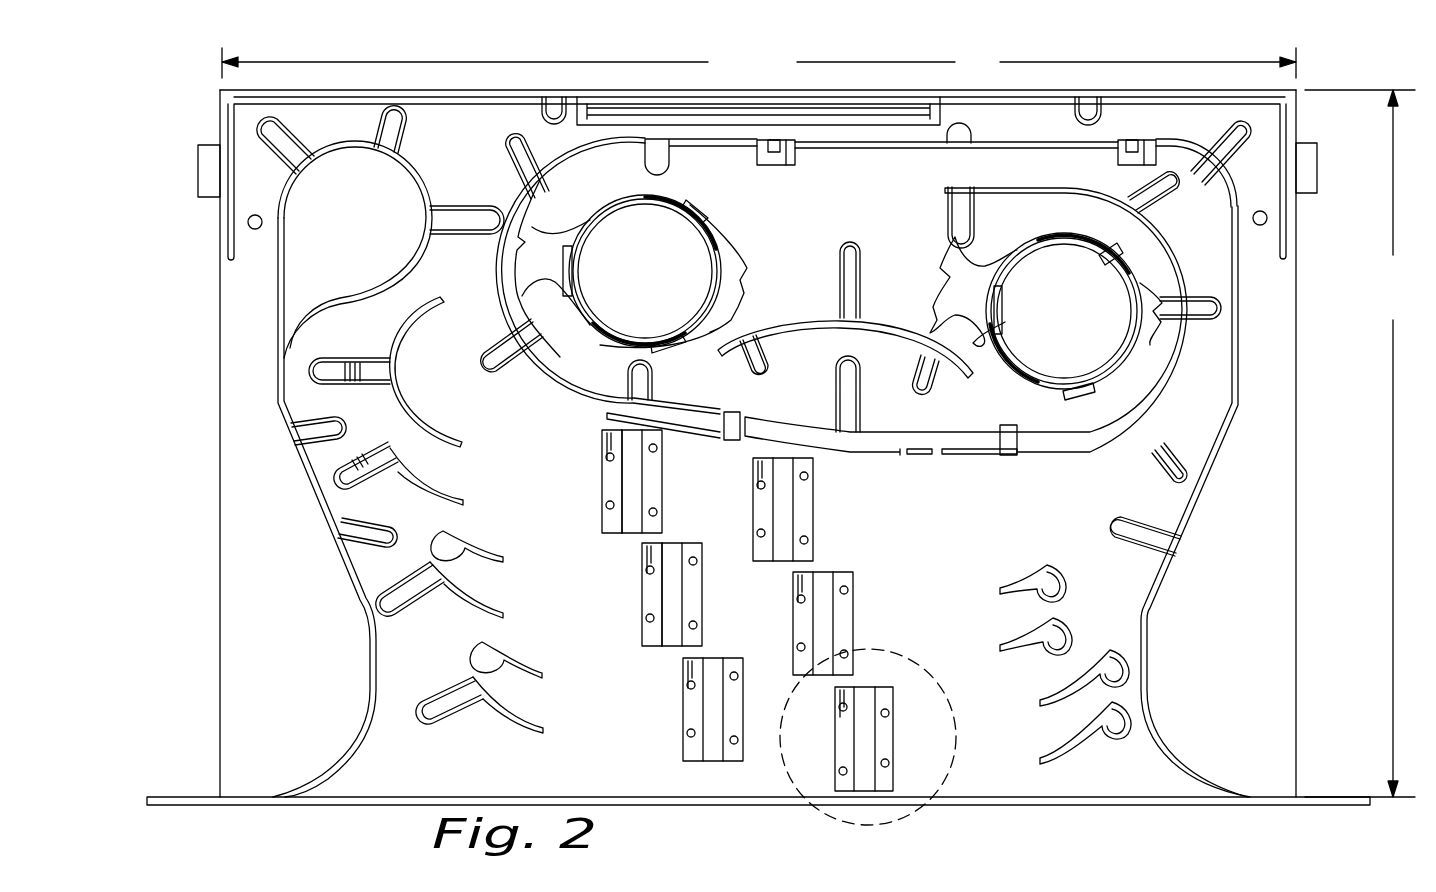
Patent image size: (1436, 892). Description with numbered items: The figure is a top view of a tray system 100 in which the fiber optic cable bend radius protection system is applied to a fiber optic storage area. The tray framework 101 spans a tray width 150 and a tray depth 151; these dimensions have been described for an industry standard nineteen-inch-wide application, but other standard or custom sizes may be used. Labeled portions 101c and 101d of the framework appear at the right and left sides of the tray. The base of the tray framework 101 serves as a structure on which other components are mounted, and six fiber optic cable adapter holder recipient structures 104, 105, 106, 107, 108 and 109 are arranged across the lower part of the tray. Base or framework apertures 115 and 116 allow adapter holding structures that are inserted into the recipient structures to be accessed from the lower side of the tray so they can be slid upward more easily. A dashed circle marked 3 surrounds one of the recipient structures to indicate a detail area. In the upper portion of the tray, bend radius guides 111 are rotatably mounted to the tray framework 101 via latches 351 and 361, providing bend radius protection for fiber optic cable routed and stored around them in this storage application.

The tray system 100 is at (968, 81).
The tray framework 101 is at (1028, 528).
The right side wall 101c is at (1298, 525).
The left side wall 101d is at (221, 510).
The bend radius guides 111 is at (517, 265).
The latch 361 is at (665, 338).
The latch 351 is at (1082, 375).
The fiber optic cable adapter holder recipient structure 104 is at (612, 522).
The fiber optic cable adapter holder recipient structure 105 is at (651, 638).
The fiber optic cable adapter holder recipient structure 106 is at (692, 705).
The fiber optic cable adapter holder recipient structure 107 is at (803, 506).
The fiber optic cable adapter holder recipient structure 108 is at (806, 622).
The fiber optic cable adapter holder recipient structure 109 is at (883, 736).
The base or framework aperture 115 is at (633, 475).
The base or framework aperture 116 is at (673, 590).
The detail area of FIG. 3 is at (897, 648).
The tray width 150 is at (759, 63).
The tray depth 151 is at (1362, 443).